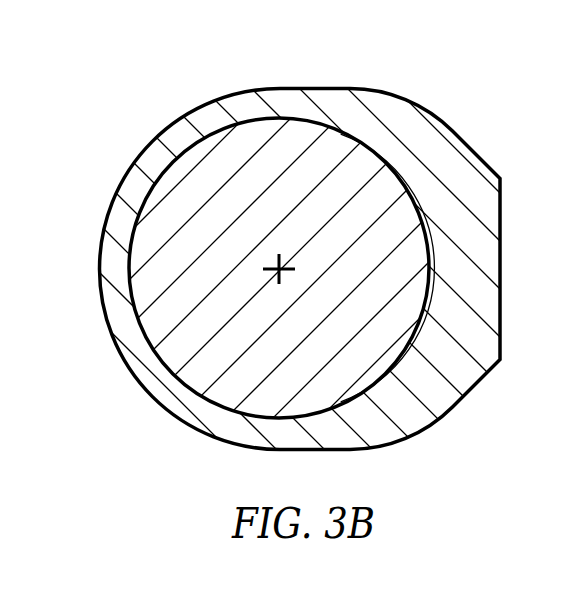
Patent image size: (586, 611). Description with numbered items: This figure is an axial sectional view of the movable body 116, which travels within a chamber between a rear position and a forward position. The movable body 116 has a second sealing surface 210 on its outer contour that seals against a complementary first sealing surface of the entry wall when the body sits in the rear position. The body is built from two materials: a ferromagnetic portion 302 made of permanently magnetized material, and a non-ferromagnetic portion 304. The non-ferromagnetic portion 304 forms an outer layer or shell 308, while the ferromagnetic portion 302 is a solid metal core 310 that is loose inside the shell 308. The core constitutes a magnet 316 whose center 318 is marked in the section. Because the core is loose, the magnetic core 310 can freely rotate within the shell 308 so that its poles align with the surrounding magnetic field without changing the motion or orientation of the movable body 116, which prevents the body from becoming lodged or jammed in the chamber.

The movable body 116 is at (210, 78).
The second sealing surface 210 is at (127, 182).
The ferromagnetic portion 302 is at (147, 283).
The non-ferromagnetic portion 304 is at (407, 417).
The shell 308 is at (227, 429).
The solid metal core 310 is at (182, 350).
The magnet 316 is at (311, 160).
The center 318 is at (278, 263).